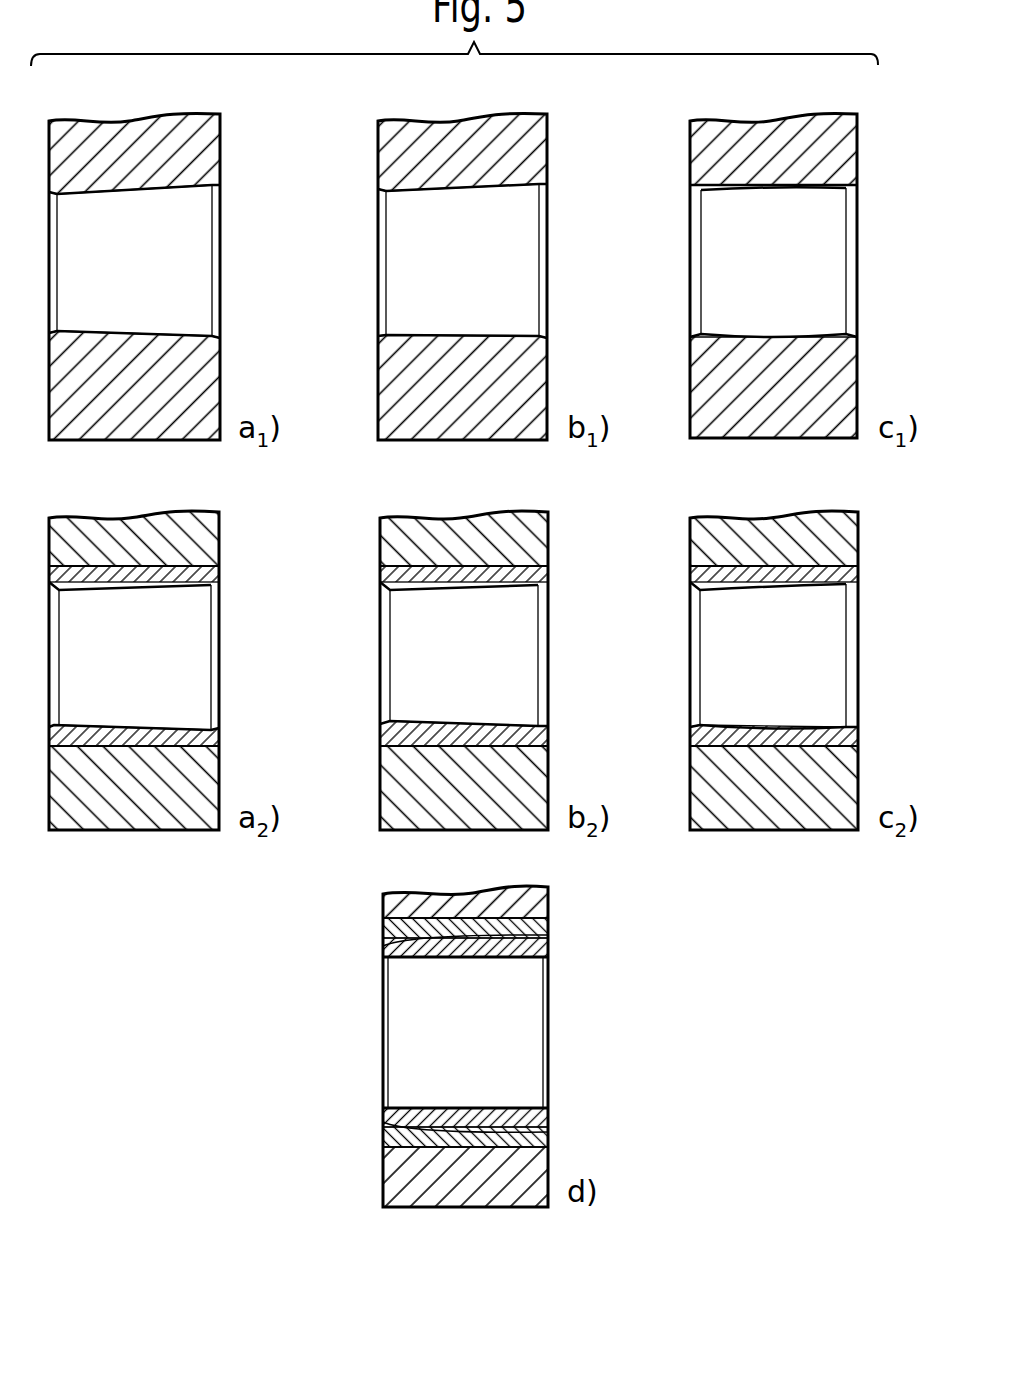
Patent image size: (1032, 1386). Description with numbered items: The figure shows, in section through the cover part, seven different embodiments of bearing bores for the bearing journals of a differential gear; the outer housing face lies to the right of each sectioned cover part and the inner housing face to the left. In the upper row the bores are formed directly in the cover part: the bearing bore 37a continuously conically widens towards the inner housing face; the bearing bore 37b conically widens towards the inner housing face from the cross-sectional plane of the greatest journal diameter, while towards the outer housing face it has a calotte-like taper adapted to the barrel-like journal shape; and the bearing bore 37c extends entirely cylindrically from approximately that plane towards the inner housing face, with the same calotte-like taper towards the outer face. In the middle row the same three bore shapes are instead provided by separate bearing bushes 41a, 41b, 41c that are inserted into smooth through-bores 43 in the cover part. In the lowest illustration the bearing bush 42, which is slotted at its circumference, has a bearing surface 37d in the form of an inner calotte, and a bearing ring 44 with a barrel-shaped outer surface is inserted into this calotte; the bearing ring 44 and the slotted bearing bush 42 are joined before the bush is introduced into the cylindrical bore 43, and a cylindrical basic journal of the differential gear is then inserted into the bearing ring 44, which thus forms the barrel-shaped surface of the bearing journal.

The bearing bore 37a is at (175, 191).
The bearing bore 37b is at (502, 191).
The bearing bore 37c is at (812, 189).
The bearing surface 37d is at (511, 942).
The bearing bush 41a is at (177, 580).
The bearing bush 41b is at (504, 580).
The bearing bush 41c is at (814, 580).
The bearing bush 42 is at (535, 938).
The through-bore 43 is at (191, 575).
The bearing ring 44 is at (485, 952).